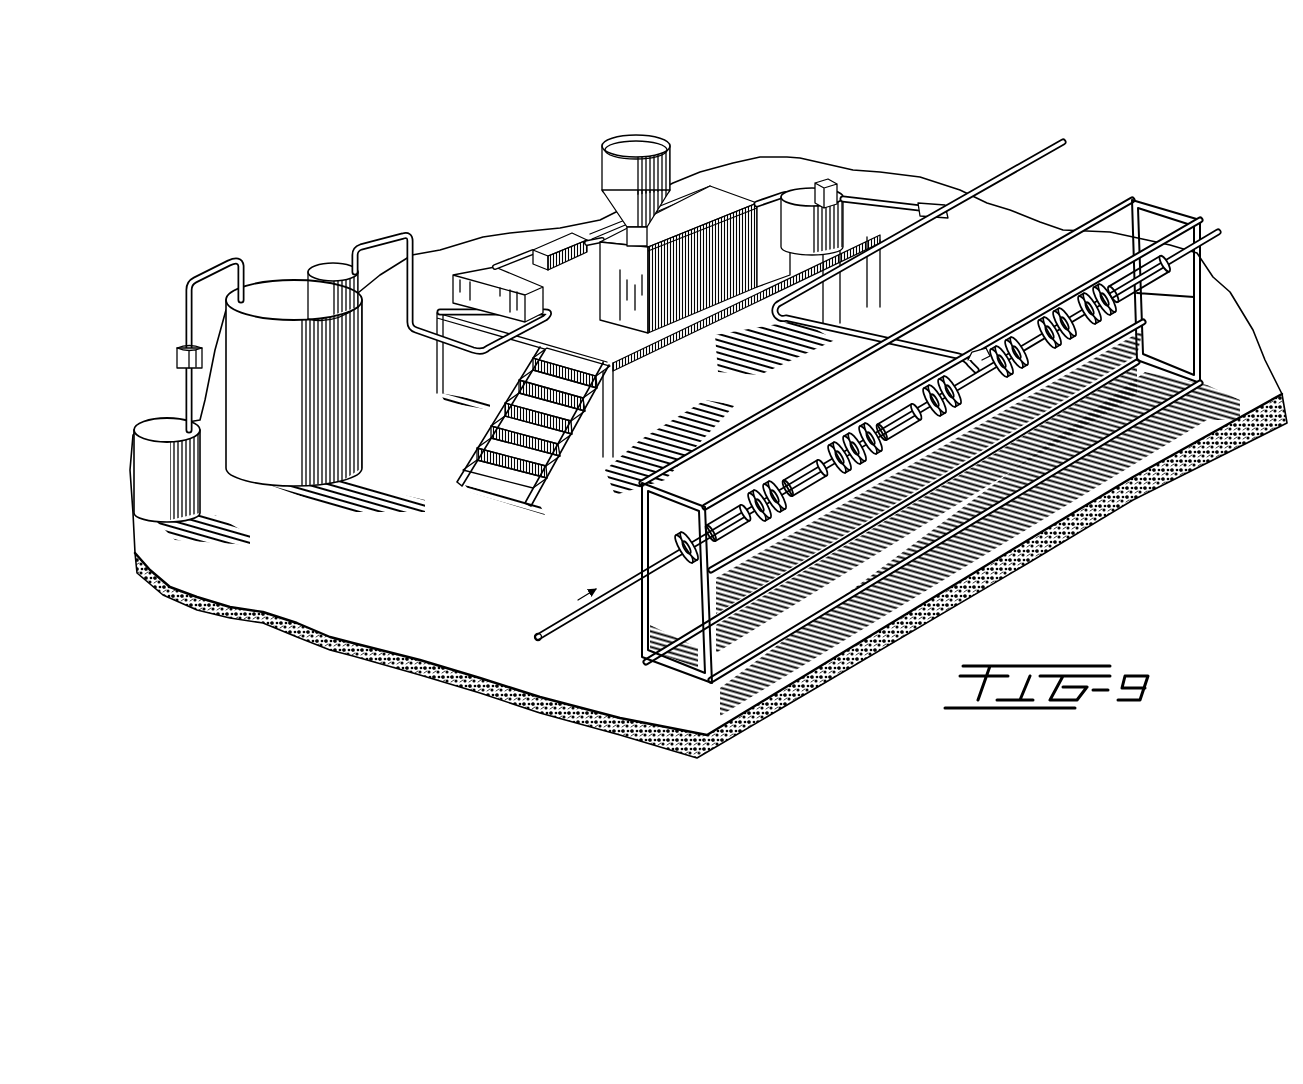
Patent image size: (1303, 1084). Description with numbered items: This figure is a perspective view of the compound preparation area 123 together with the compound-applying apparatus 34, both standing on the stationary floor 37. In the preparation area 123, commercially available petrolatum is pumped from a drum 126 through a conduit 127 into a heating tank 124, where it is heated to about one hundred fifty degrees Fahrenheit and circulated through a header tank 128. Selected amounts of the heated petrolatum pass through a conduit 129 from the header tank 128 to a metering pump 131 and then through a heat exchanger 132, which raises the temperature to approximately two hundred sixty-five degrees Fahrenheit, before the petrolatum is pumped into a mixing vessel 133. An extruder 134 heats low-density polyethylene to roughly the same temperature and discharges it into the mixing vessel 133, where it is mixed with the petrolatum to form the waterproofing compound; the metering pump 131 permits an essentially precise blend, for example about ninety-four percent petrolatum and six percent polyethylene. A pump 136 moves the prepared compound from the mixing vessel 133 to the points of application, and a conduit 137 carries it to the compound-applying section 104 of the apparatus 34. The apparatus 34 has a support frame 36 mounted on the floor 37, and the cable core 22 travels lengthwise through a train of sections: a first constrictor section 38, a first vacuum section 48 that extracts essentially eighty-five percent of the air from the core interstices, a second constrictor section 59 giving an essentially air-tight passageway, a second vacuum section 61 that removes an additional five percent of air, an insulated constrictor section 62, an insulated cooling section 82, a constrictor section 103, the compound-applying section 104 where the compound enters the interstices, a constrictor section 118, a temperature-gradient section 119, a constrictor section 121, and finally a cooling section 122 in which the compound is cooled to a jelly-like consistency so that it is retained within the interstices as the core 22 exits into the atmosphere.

The cable core 22 is at (570, 630).
The compound-applying apparatus 34 is at (1166, 192).
The support frame 36 is at (641, 636).
The stationary floor 37 is at (703, 724).
The first constrictor section 38 is at (684, 532).
The first vacuum section 48 is at (730, 505).
The second constrictor section 59 is at (770, 478).
The second vacuum section 61 is at (812, 452).
The insulated constrictor section 62 is at (857, 428).
The insulated cooling section 82 is at (900, 417).
The constrictor section 103 is at (940, 383).
The compound-applying section 104 is at (975, 376).
The constrictor section 118 is at (1015, 332).
The temperature-gradient section 119 is at (1056, 305).
The constrictor section 121 is at (1095, 288).
The cooling section 122 is at (1140, 293).
The compound preparation area 123 is at (407, 195).
The heating tank 124 is at (345, 411).
The drum 126 is at (146, 445).
The conduit 127 is at (190, 282).
The header tank 128 is at (325, 298).
The conduit 129 is at (353, 258).
The metering pump 131 is at (478, 270).
The heat exchanger 132 is at (557, 240).
The mixing vessel 133 is at (800, 200).
The extruder 134 is at (710, 188).
The pump 136 is at (830, 186).
The conduit 137 is at (906, 232).